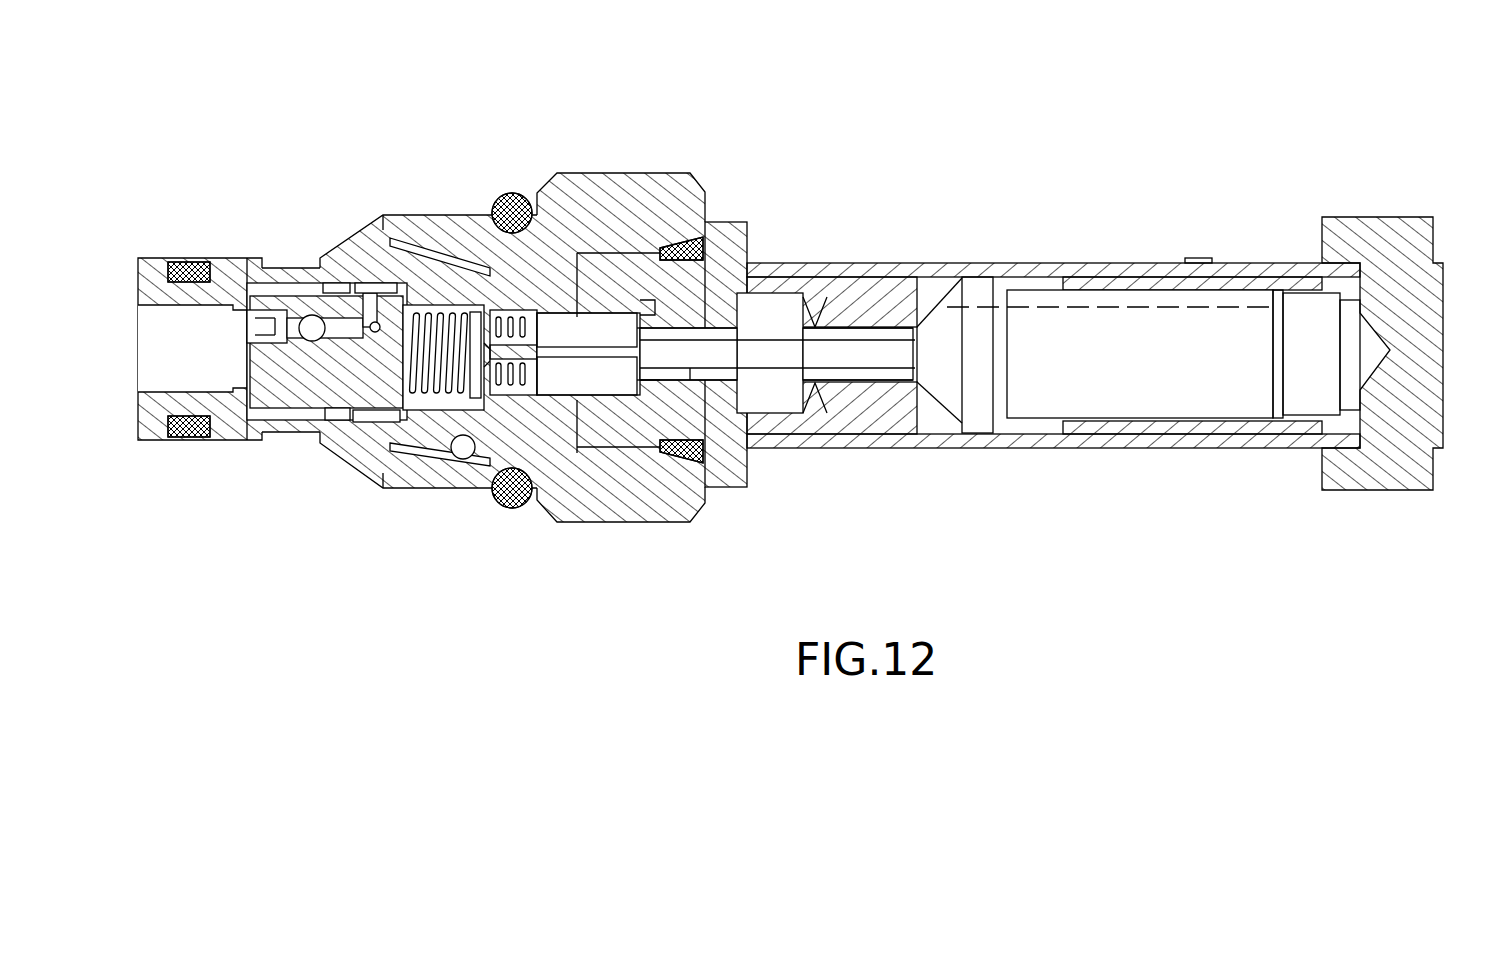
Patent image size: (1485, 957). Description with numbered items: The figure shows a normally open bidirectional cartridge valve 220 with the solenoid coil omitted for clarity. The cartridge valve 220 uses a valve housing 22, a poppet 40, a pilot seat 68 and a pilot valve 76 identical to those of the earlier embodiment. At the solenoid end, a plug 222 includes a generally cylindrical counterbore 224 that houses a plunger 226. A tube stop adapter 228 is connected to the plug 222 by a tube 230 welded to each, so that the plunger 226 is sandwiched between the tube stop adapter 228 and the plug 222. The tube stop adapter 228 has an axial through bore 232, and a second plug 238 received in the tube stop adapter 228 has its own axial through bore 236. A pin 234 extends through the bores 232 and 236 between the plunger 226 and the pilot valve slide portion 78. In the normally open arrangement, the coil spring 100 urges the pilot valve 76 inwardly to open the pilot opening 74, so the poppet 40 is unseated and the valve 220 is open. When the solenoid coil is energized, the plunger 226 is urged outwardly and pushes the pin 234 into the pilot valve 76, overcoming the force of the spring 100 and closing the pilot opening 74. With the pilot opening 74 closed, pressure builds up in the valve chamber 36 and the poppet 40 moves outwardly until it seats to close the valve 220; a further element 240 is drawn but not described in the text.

The valve housing 22 is at (234, 250).
The valve chamber 36 is at (463, 430).
The poppet 40 is at (285, 278).
The pilot seat 68 is at (576, 317).
The pilot opening 74 is at (455, 290).
The pilot valve 76 is at (550, 370).
The pilot valve slide portion 78 is at (648, 305).
The coil spring 100 is at (512, 196).
The cartridge valve 220 is at (862, 92).
The plug 222 is at (1200, 258).
The counterbore 224 is at (1300, 396).
The plunger 226 is at (1063, 328).
The tube stop adapter 228 is at (788, 265).
The tube 230 is at (976, 263).
The axial through bore 232 is at (882, 378).
The pin 234 is at (870, 312).
The axial through bore 236 is at (693, 378).
The plug 238 is at (747, 222).
The seat 240 is at (660, 372).